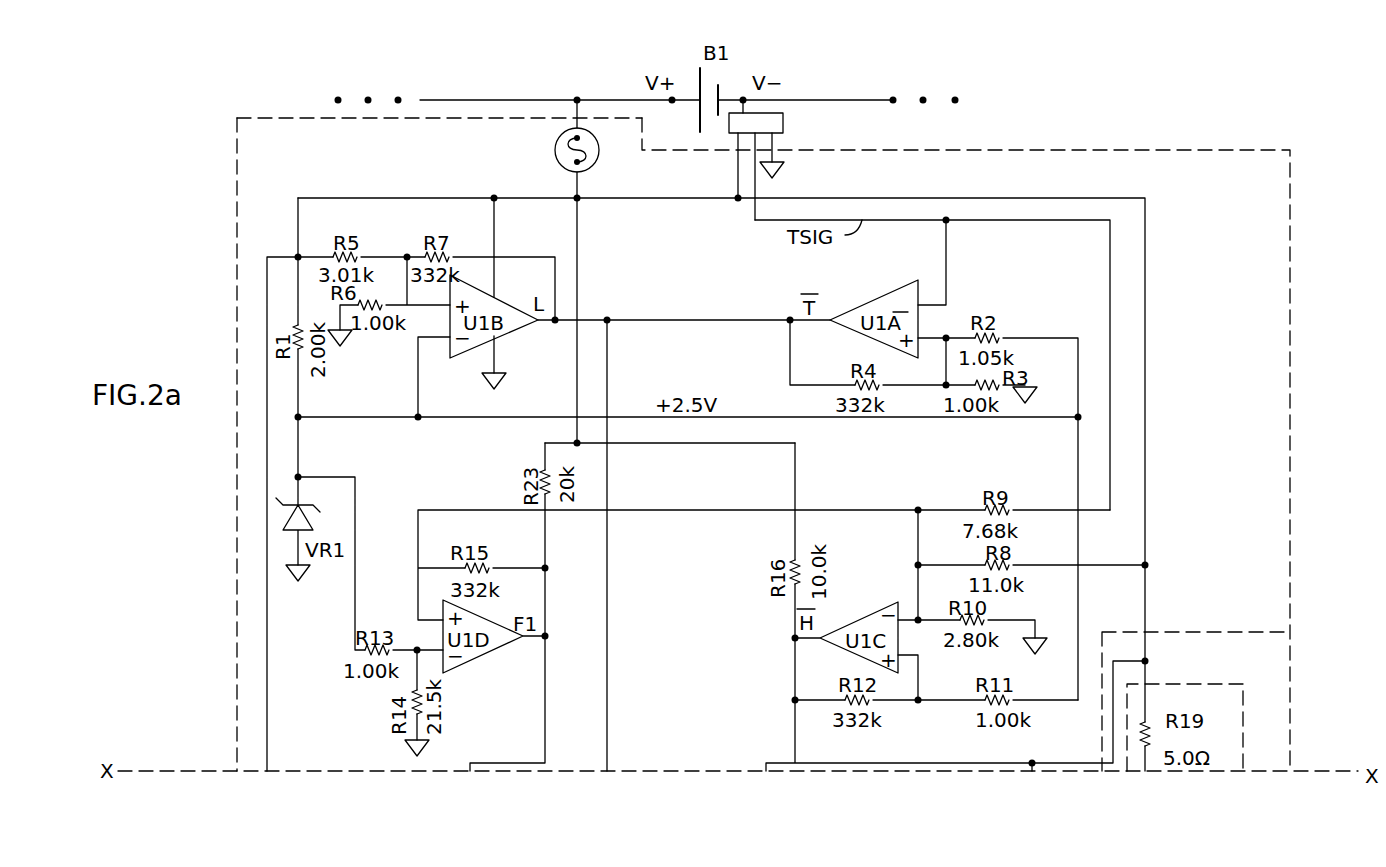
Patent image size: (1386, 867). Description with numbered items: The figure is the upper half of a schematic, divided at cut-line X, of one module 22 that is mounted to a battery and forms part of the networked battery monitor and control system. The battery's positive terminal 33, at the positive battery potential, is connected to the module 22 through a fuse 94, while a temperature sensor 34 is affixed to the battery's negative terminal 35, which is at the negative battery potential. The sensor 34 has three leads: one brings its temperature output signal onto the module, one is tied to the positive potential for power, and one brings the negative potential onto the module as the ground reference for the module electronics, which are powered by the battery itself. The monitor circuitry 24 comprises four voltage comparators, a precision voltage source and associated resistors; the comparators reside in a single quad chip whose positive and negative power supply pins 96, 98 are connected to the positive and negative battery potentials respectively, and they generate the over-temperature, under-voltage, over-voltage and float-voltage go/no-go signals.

The module 22 is at (1153, 111).
The monitor circuitry 24 is at (322, 118).
The positive terminal 33 is at (698, 82).
The temperature sensor 34 is at (783, 122).
The negative terminal 35 is at (720, 90).
The fuse 94 is at (555, 152).
The positive power supply pin 96 is at (494, 297).
The negative power supply pin 98 is at (496, 350).